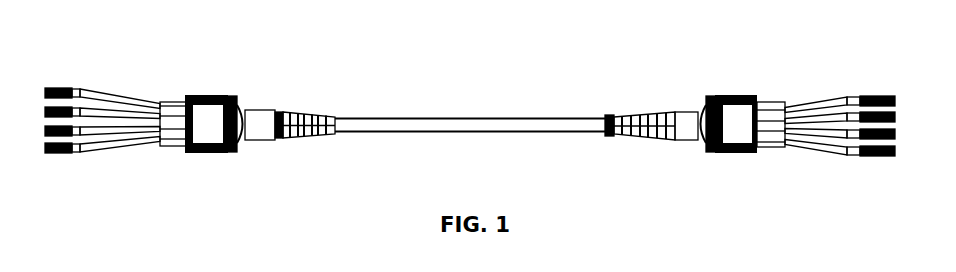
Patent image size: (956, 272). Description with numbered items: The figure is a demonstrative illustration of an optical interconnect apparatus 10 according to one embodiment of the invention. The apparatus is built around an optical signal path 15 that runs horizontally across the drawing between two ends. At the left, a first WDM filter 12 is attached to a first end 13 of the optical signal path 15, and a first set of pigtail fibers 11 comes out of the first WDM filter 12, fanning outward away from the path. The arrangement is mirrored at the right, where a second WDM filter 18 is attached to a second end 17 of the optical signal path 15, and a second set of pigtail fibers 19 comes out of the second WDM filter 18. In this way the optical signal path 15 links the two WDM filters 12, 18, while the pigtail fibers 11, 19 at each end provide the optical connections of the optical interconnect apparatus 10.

The optical interconnect apparatus 10 is at (305, 177).
The first set of pigtail fibers 11 is at (77, 92).
The first WDM filter 12 is at (215, 97).
The first end 13 is at (338, 117).
The optical signal path 15 is at (427, 117).
The second end 17 is at (610, 117).
The second WDM filter 18 is at (737, 98).
The second set of pigtail fibers 19 is at (867, 92).